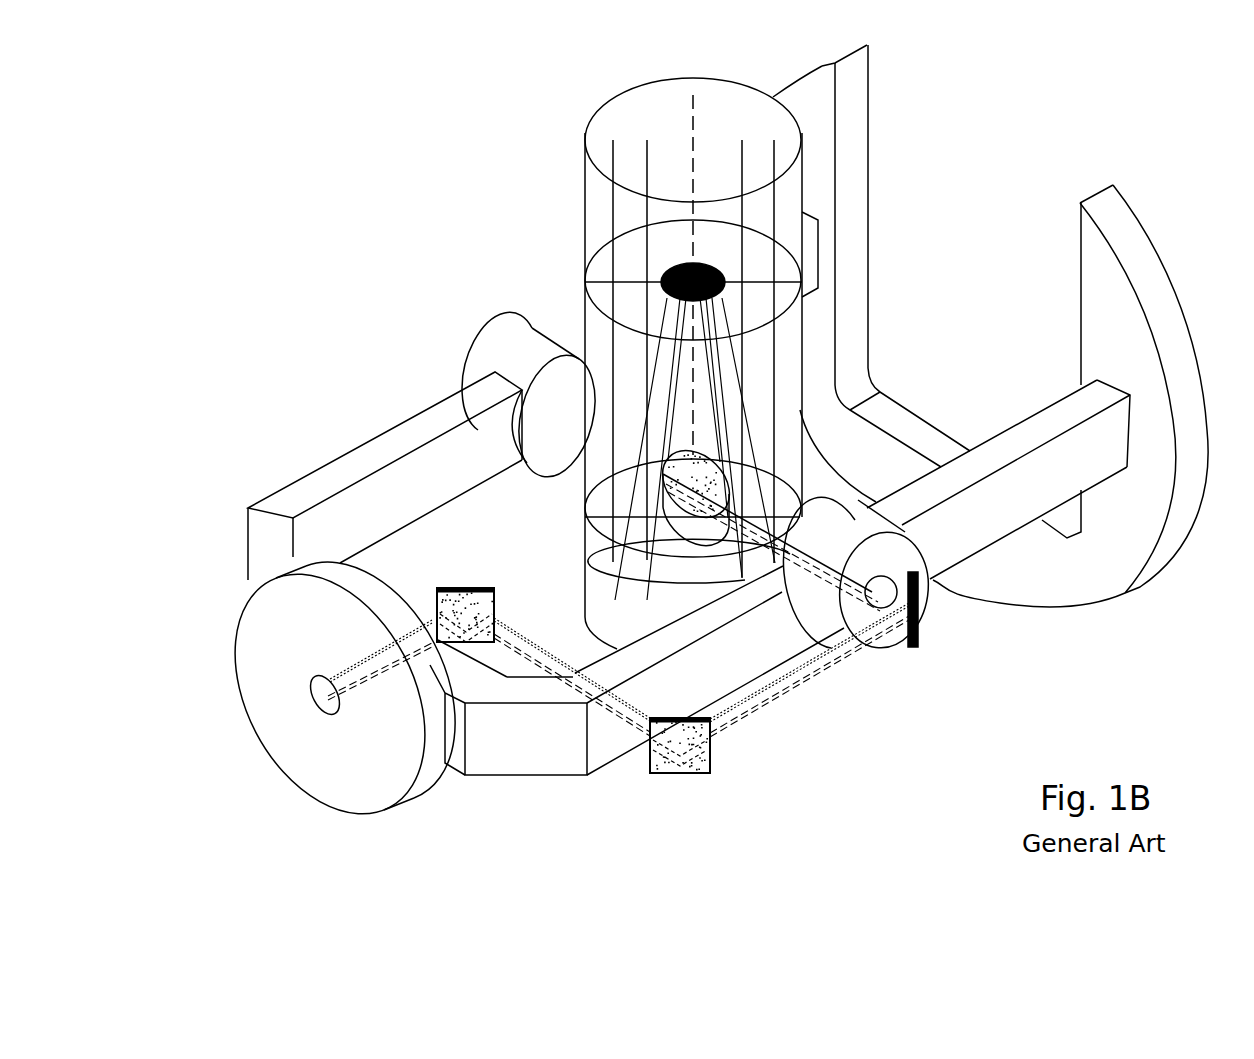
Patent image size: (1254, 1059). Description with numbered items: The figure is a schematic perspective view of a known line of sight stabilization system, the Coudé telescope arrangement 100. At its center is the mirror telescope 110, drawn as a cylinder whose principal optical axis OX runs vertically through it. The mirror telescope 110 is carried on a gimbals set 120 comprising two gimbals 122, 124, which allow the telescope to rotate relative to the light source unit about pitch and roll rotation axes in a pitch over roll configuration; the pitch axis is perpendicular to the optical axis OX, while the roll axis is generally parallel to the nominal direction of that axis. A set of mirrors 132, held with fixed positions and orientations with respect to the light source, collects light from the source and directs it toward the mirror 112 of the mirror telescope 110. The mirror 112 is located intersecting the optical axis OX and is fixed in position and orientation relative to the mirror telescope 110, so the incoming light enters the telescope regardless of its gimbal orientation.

The Coudé telescope arrangement 100 is at (370, 264).
The mirror telescope 110 is at (583, 203).
The mirror 112 is at (722, 458).
The gimbals set 120 is at (342, 482).
The gimbal 122 is at (512, 358).
The gimbal 124 is at (270, 641).
The set of mirrors 132 is at (916, 645).